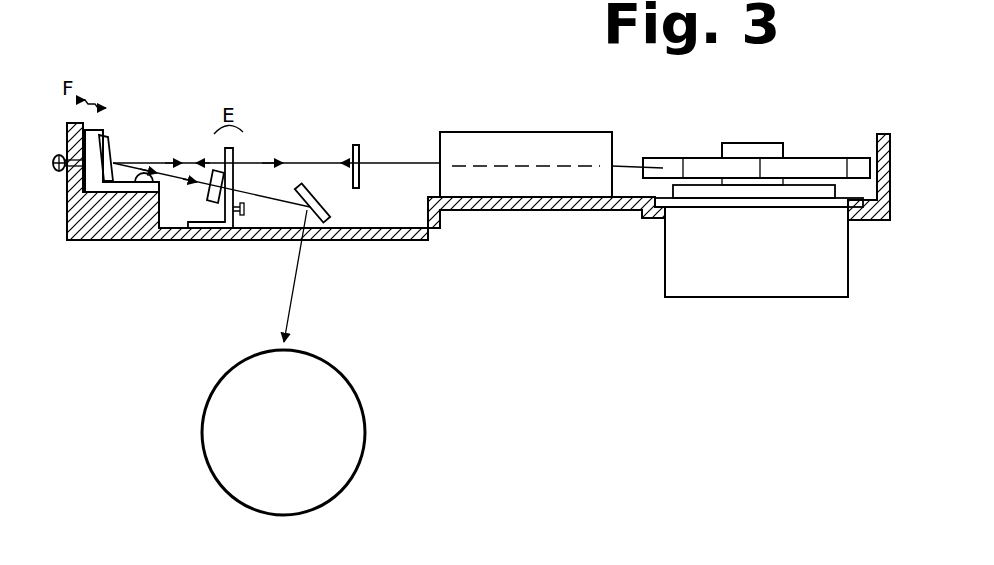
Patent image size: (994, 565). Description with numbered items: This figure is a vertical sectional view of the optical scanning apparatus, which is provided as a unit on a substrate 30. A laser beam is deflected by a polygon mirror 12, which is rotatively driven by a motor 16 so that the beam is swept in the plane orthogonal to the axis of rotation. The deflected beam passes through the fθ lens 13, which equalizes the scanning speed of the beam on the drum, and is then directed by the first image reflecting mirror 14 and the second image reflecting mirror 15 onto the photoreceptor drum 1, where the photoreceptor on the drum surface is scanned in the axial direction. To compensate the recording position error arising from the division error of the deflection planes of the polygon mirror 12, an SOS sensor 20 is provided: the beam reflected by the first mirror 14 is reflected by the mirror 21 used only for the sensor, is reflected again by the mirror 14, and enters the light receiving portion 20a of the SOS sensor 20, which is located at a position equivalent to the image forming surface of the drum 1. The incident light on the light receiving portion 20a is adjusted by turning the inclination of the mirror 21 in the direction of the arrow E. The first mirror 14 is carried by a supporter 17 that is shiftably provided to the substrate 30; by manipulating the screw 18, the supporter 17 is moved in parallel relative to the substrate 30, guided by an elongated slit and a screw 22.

The photoreceptor drum 1 is at (351, 390).
The polygon mirror 12 is at (703, 158).
The fθ lens 13 is at (490, 132).
The first image reflecting mirror 14 is at (112, 153).
The second image reflecting mirror 15 is at (305, 186).
The motor 16 is at (665, 262).
The supporter 17 is at (107, 188).
The screw 18 is at (55, 161).
The SOS sensor 20 is at (360, 150).
The light receiving portion 20a is at (353, 150).
The mirror for the sensor 21 is at (212, 178).
The screw 22 is at (155, 178).
The substrate 30 is at (135, 242).